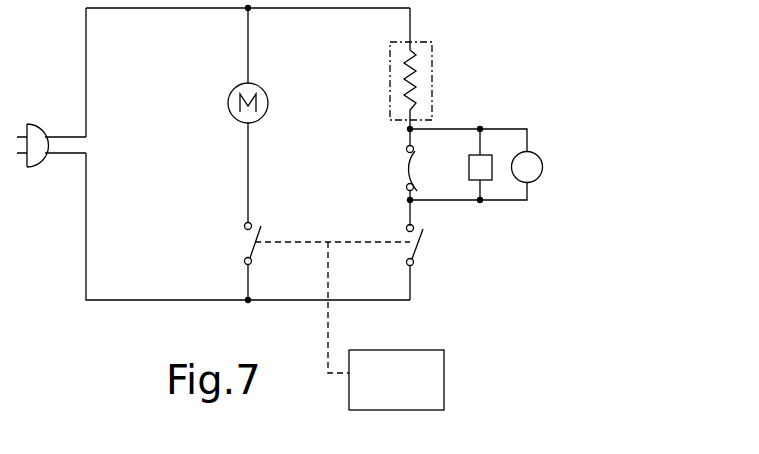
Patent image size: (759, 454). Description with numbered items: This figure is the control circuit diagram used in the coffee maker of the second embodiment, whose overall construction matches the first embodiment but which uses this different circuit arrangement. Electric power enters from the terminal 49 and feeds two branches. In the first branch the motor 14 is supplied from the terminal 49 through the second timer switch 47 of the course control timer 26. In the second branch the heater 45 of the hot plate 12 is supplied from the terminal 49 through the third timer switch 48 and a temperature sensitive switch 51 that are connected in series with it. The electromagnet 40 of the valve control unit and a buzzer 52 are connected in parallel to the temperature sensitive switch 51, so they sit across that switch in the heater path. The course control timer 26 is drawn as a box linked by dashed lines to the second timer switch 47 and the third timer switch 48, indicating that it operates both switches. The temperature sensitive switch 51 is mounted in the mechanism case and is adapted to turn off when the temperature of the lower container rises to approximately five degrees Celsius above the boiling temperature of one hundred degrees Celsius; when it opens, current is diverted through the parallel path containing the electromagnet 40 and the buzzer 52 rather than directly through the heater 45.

The hot plate 12 is at (390, 58).
The motor 14 is at (268, 101).
The course control timer 26 is at (444, 373).
The electromagnet 40 is at (493, 164).
The heater 45 is at (417, 73).
The second timer switch 47 is at (243, 244).
The third timer switch 48 is at (405, 246).
The terminal 49 is at (36, 124).
The temperature sensitive switch 51 is at (418, 162).
The buzzer 52 is at (542, 162).